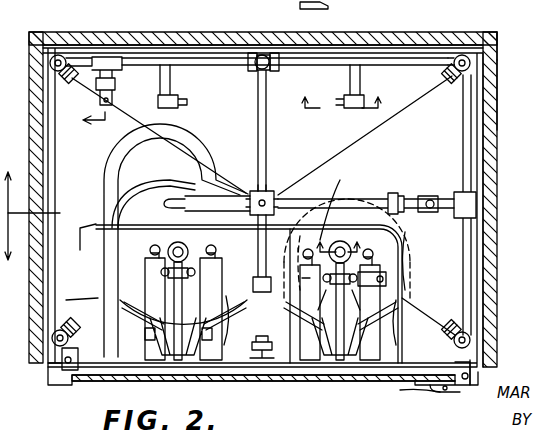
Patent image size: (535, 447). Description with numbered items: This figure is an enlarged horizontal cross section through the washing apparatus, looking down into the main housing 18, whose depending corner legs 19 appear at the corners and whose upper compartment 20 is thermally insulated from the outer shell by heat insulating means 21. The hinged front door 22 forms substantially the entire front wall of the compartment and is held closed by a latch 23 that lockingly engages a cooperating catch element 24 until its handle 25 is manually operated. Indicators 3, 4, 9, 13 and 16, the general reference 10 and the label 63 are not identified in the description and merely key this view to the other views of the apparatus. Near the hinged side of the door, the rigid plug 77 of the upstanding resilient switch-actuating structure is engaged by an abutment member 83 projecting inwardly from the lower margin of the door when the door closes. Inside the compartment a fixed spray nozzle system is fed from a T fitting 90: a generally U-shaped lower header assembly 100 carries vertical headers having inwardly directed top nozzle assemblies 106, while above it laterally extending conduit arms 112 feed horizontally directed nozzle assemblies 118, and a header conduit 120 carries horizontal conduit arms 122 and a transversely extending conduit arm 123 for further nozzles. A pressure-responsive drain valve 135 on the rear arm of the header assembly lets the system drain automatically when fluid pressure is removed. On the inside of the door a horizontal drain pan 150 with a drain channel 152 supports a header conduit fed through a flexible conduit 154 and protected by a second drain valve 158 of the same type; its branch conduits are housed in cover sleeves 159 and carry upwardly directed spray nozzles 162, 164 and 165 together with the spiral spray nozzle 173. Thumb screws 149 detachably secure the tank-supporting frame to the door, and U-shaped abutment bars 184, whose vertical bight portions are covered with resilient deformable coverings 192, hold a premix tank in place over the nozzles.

The section line 3 is at (32, 191).
The section line 4 is at (14, 237).
The section line 9 is at (338, 244).
The portable welding apparatus 10 is at (499, 170).
The section line 13 is at (103, 90).
The section line 16 is at (343, 103).
The main housing 18 is at (506, 53).
The corner legs 19 is at (337, 6).
The upper compartment 20 is at (463, 255).
The heat insulating means 21 is at (488, 108).
The hinged front door 22 is at (84, 385).
The latch 23 is at (442, 394).
The catch element 24 is at (470, 392).
The handle 25 is at (430, 392).
The tank housing 63 is at (380, 262).
The rigid plug 77 is at (90, 315).
The abutment member 83 is at (95, 372).
The T fitting 90 is at (377, 205).
The lower header assembly 100 is at (398, 62).
The top nozzle assembly 106 is at (446, 88).
The conduit arms 112 is at (238, 70).
The nozzle assemblies 118 is at (176, 99).
The header conduit 120 is at (272, 112).
The horizontal conduit arms 122 is at (138, 186).
The transverse conduit arm 123 is at (257, 243).
The drain valve assembly 135 is at (115, 86).
The thumb screws 149 is at (268, 340).
The drain pan 150 is at (152, 224).
The drain channel 152 is at (78, 228).
The flexible conduit 154 is at (190, 140).
The pressure-responsive drain valve 158 is at (300, 168).
The cover sleeve 159 is at (304, 278).
The spray nozzle 162 is at (288, 241).
The spray nozzle 164 is at (321, 299).
The spray nozzle 165 is at (363, 300).
The spray nozzle 173 is at (320, 245).
The U-shaped abutment bars 184 is at (160, 330).
The resilient deformable coverings 192 is at (226, 296).